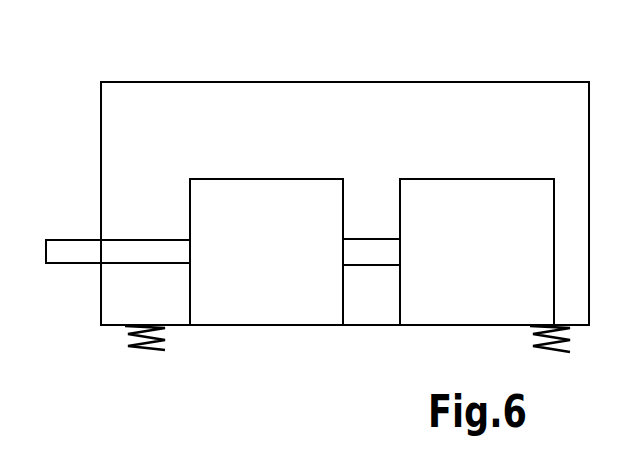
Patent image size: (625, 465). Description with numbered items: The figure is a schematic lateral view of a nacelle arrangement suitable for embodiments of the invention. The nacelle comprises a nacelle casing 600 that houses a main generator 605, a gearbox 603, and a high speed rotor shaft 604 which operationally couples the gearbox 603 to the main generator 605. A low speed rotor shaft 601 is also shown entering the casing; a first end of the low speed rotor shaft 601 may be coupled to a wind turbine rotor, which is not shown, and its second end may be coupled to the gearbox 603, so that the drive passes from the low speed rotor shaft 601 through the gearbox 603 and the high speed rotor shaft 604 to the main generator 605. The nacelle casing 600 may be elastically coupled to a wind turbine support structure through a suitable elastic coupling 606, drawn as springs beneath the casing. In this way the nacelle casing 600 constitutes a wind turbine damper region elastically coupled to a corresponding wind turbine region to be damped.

The nacelle casing 600 is at (362, 112).
The low speed rotor shaft 601 is at (72, 252).
The gearbox 603 is at (285, 205).
The high speed rotor shaft 604 is at (385, 248).
The main generator 605 is at (478, 210).
The elastic coupling 606 is at (165, 343).